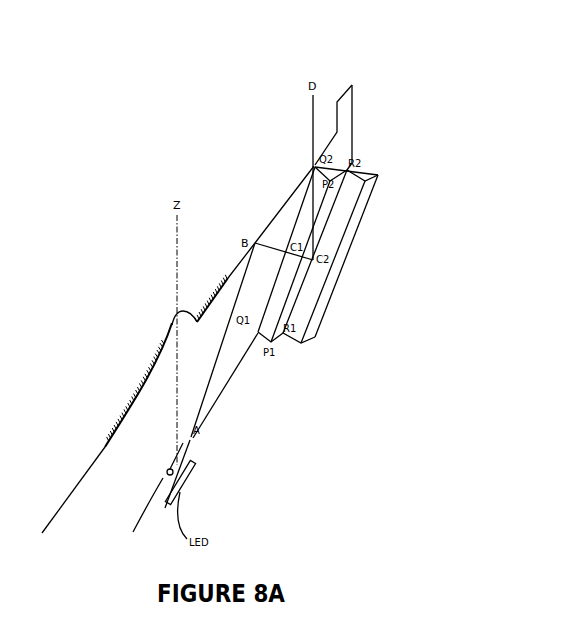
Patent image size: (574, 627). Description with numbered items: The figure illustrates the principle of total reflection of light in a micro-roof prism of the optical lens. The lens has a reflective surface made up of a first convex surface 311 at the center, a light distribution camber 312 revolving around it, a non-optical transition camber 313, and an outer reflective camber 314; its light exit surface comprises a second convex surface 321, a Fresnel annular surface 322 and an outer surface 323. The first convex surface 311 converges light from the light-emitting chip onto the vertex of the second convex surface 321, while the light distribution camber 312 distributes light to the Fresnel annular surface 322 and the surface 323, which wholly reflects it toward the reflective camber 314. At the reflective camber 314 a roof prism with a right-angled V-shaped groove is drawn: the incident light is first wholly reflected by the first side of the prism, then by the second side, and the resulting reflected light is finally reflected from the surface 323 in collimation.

The first convex surface 311 is at (174, 448).
The light distribution camber 312 is at (167, 472).
The transition camber 313 is at (236, 380).
The reflective camber 314 is at (320, 223).
The second convex surface 321 is at (169, 334).
The Fresnel annular surface 322 is at (218, 294).
The surface 323 is at (290, 197).